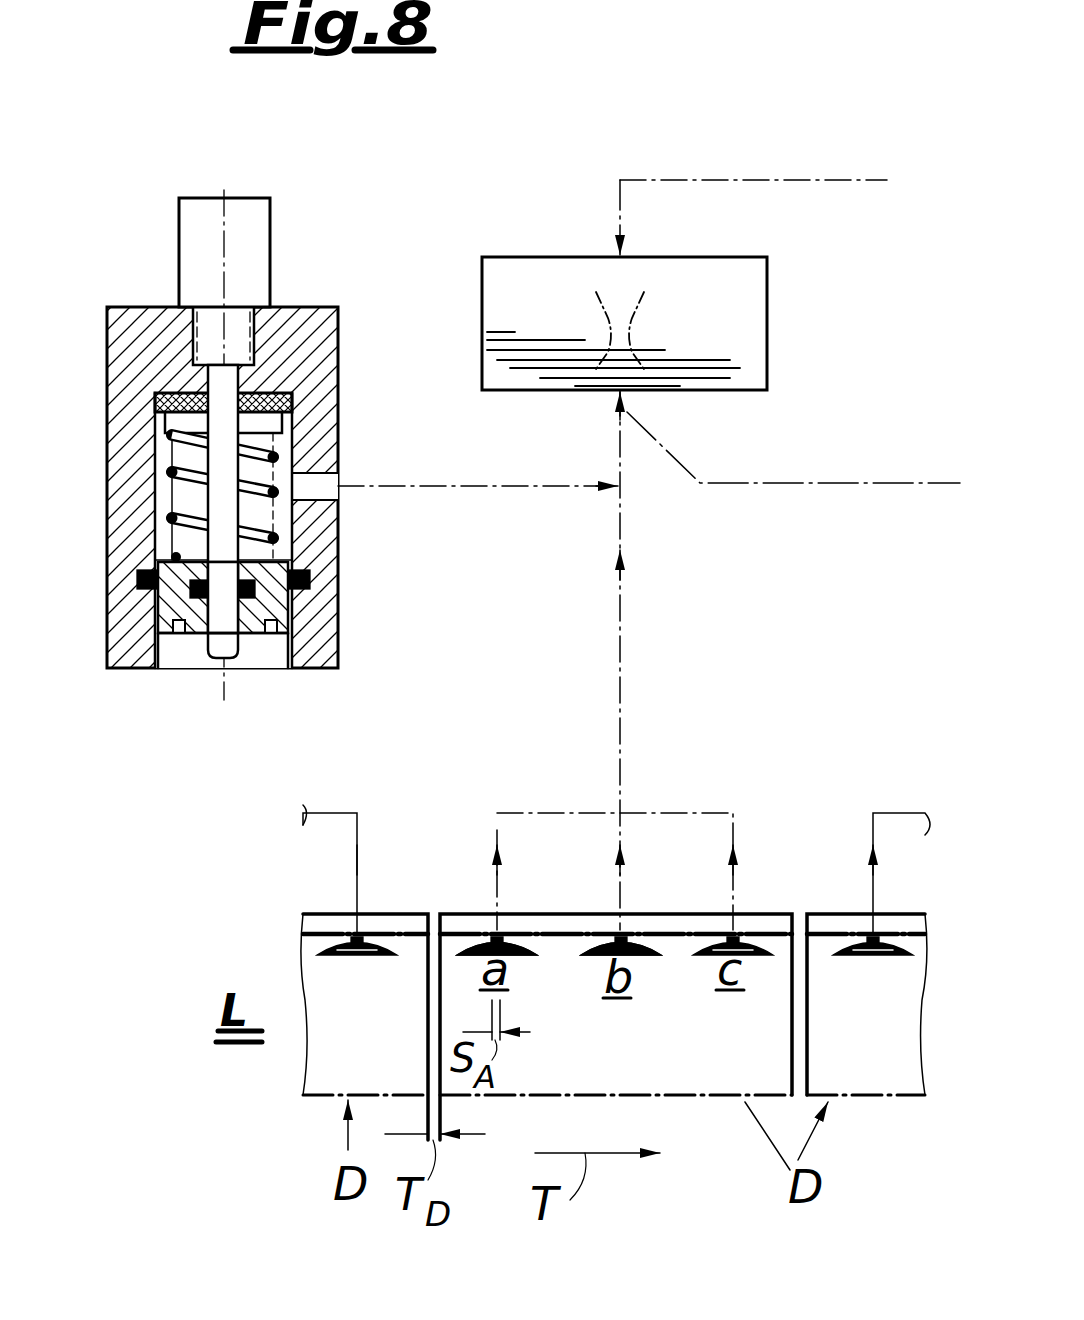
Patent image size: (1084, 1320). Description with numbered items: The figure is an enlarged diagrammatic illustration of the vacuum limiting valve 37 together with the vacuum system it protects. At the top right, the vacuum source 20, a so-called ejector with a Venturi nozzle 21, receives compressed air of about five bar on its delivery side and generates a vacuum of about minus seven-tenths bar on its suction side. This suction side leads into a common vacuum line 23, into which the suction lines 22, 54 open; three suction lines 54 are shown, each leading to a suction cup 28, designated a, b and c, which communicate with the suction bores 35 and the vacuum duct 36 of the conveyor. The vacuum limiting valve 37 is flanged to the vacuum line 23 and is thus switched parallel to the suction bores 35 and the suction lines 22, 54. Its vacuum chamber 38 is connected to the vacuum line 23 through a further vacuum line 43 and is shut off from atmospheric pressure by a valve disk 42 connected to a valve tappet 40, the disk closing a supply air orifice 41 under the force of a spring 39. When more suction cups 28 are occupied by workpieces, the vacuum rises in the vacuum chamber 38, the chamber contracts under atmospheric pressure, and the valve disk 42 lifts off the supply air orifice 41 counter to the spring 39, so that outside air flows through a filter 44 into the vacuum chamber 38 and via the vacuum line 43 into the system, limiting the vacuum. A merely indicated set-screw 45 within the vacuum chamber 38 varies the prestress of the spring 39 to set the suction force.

The vacuum source 20 is at (790, 333).
The Venturi nozzle 21 is at (665, 305).
The suction lines 22 is at (695, 813).
The vacuum line 23 is at (620, 614).
The suction cup 28 is at (703, 950).
The suction bores 35 is at (497, 932).
The vacuum duct 36 is at (497, 949).
The vacuum limiting valve 37 is at (322, 243).
The vacuum chamber 38 is at (286, 520).
The spring 39 is at (255, 495).
The valve tappet 40 is at (220, 640).
The supply air orifice 41 is at (205, 383).
The valve disk 42 is at (285, 408).
The vacuum line 43 is at (553, 488).
The filter 44 is at (240, 215).
The set-screw 45 is at (292, 588).
The suction line 54 is at (733, 885).